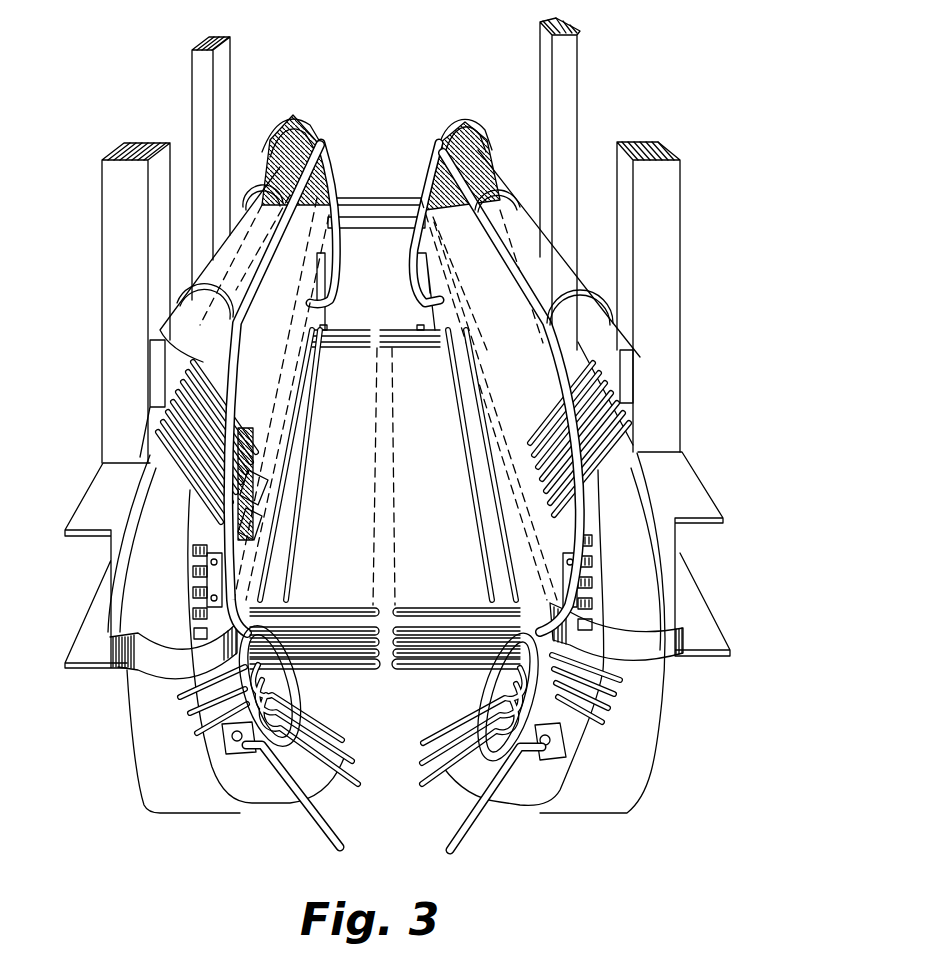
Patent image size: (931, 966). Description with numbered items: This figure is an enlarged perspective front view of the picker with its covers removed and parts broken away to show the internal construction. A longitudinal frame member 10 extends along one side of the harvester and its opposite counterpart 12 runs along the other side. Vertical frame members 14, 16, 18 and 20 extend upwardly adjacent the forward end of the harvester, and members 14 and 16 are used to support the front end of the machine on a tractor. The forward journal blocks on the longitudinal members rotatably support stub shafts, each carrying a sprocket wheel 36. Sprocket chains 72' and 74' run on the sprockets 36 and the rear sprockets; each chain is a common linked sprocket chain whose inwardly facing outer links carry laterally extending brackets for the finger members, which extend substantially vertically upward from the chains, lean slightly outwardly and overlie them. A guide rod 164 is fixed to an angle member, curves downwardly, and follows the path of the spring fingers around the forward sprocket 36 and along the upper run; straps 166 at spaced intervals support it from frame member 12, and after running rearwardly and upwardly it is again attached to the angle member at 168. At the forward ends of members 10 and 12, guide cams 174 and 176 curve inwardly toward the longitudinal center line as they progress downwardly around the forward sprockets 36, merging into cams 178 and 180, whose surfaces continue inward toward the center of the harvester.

The longitudinal frame member 10 is at (96, 494).
The longitudinal frame member 12 is at (693, 483).
The vertical frame member 14 is at (108, 231).
The vertical frame member 16 is at (192, 89).
The vertical frame member 18 is at (675, 229).
The vertical frame member 20 is at (573, 93).
The sprocket wheel 36 is at (255, 601).
The sprocket chain 72' is at (184, 592).
The sprocket chain 74' is at (605, 582).
The guide rod 164 is at (533, 300).
The straps 166 is at (492, 183).
The attachment point of guide rod 168 is at (265, 184).
The guide cam 174 is at (136, 724).
The guide cam 176 is at (653, 709).
The guide cam 178 is at (274, 797).
The guide cam 180 is at (468, 783).